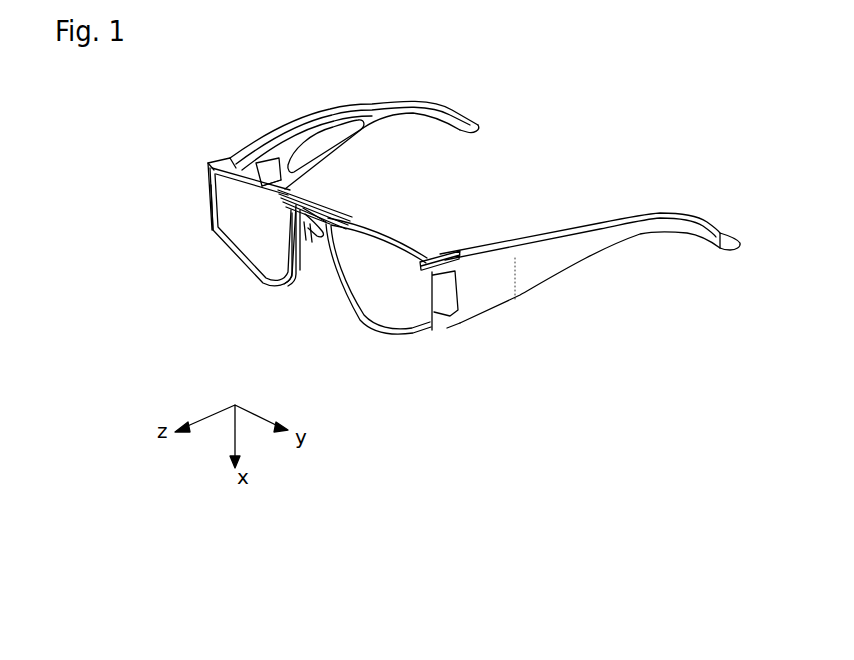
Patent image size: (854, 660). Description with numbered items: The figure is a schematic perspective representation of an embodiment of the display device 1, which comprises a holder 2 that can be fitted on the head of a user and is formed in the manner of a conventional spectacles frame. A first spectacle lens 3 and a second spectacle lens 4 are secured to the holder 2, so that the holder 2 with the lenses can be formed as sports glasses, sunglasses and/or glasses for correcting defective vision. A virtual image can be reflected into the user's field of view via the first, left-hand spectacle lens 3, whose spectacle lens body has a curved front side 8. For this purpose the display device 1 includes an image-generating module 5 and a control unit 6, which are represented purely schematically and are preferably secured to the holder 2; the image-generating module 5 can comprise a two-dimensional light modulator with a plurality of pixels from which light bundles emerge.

The display device 1 is at (282, 325).
The holder 2 is at (366, 103).
The first spectacle lens 3 is at (370, 328).
The second spectacle lens 4 is at (262, 277).
The image-generating module 5 is at (263, 163).
The control unit 6 is at (268, 136).
The curved front side 8 is at (238, 243).